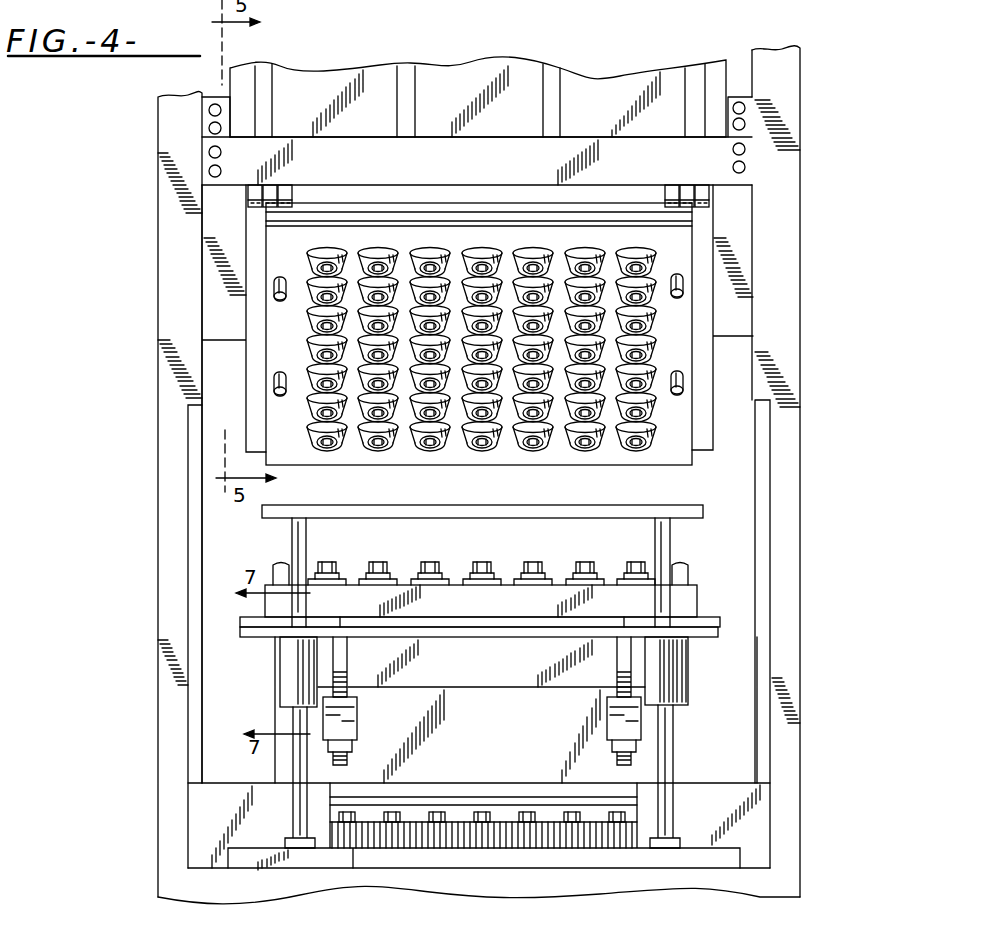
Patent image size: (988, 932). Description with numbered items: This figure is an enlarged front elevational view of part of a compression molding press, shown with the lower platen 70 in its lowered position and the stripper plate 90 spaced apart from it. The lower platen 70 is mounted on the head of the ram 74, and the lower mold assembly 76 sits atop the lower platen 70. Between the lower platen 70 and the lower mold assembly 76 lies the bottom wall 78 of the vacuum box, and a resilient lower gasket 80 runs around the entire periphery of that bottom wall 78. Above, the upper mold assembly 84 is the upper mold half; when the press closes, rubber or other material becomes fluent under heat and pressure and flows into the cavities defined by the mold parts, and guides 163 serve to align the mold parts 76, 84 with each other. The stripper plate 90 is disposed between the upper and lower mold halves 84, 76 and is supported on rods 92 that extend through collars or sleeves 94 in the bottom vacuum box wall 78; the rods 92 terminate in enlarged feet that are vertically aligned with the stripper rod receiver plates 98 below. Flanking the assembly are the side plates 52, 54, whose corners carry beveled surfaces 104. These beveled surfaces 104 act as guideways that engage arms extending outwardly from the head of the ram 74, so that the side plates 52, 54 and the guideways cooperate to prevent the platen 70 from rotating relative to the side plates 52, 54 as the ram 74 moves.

The side plate 52 is at (168, 542).
The side plate 54 is at (793, 630).
The lower platen 70 is at (600, 655).
The ram 74 is at (478, 68).
The lower mold assembly 76 is at (688, 605).
The bottom wall 78 is at (258, 616).
The lower gasket 80 is at (250, 632).
The upper mold assembly 84 is at (513, 334).
The stripper plate 90 is at (262, 510).
The rods 92 is at (300, 540).
The collars or sleeves 94 is at (300, 678).
The stripper rod receiver plates 98 is at (740, 850).
The beveled surfaces 104 is at (758, 500).
The guides 163 is at (690, 285).